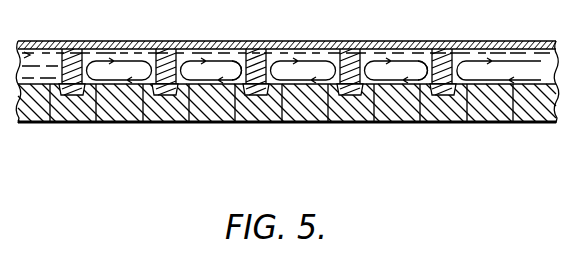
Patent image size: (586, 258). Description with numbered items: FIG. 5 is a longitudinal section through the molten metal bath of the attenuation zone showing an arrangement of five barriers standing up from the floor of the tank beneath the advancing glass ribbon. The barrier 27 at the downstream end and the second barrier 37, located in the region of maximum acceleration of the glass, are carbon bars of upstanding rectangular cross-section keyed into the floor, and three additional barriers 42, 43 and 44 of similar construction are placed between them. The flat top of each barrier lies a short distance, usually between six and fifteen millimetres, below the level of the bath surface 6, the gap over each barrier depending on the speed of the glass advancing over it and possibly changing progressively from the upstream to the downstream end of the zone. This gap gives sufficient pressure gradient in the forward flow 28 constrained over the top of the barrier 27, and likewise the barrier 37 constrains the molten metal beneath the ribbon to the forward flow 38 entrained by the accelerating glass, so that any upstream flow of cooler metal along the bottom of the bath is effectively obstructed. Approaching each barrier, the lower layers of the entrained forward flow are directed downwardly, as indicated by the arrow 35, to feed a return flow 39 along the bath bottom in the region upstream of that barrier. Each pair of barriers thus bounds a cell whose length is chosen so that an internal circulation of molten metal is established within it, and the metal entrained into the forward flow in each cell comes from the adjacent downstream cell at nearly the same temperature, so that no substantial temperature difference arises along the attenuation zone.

The bath surface 6 is at (393, 62).
The barrier 27 is at (448, 93).
The forward flow 28 is at (440, 55).
The arrow indicating downward flow 35 is at (239, 83).
The second barrier 37 is at (72, 93).
The forward flow 38 is at (68, 60).
The return flow 39 is at (378, 85).
The additional barrier 42 is at (169, 95).
The additional barrier 43 is at (262, 90).
The additional barrier 44 is at (353, 90).